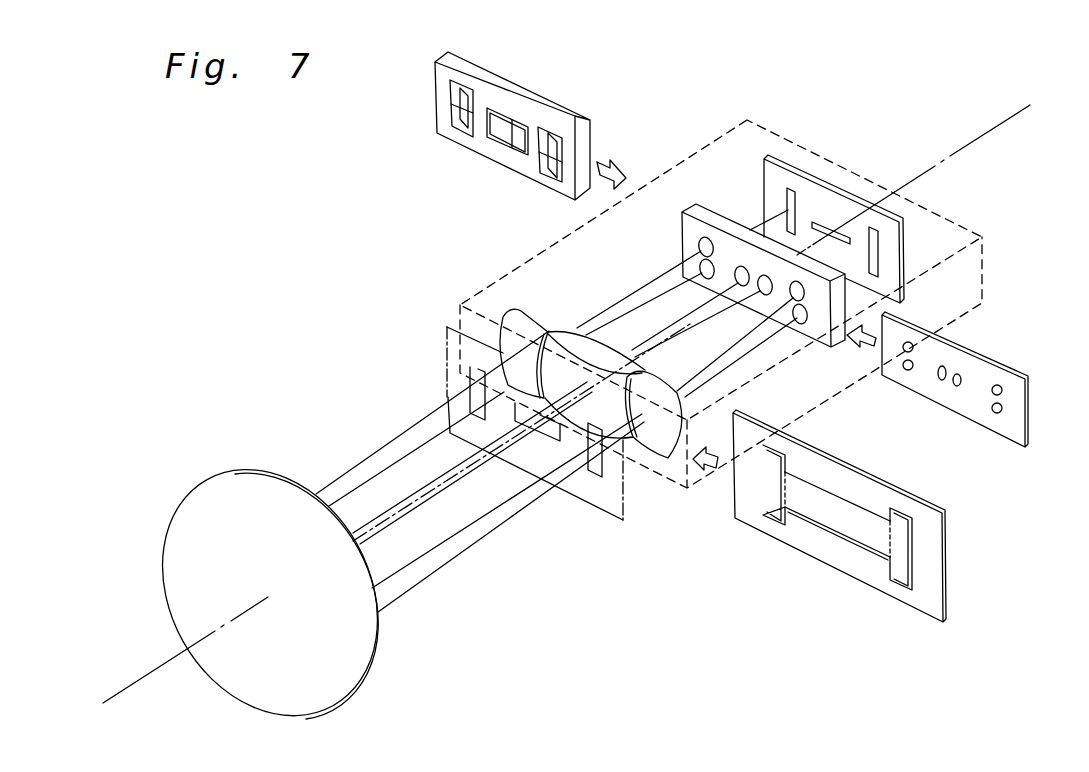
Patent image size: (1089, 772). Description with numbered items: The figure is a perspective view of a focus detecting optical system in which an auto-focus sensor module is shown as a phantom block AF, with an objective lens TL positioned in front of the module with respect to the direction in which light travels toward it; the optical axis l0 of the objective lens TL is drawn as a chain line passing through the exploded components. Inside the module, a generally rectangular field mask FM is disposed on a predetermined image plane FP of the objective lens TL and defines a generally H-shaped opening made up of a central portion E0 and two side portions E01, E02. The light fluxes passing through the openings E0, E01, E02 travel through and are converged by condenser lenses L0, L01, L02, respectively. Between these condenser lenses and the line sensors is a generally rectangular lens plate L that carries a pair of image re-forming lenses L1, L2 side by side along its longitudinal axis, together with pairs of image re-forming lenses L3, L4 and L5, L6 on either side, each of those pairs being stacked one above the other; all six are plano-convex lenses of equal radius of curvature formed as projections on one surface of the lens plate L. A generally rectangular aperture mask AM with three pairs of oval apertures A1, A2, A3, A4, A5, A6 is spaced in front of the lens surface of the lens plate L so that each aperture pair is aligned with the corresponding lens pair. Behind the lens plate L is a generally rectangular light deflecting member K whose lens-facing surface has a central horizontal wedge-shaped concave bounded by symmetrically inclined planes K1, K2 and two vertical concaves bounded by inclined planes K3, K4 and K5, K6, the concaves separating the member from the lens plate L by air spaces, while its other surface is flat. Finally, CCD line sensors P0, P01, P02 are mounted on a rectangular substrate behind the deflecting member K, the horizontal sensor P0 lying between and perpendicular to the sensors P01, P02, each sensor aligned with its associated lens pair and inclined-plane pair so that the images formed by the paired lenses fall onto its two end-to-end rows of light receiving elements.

The light deflecting member K is at (502, 126).
The inclined plane K1 is at (520, 137).
The inclined plane K2 is at (497, 131).
The inclined plane K3 is at (455, 95).
The inclined plane K4 is at (463, 118).
The inclined plane K5 is at (557, 133).
The inclined plane K6 is at (553, 167).
The AF sensor module AF is at (705, 140).
The lens plate L is at (758, 263).
The image re-forming lens L1 is at (763, 296).
The image re-forming lens L2 is at (737, 283).
The image re-forming lens L3 is at (705, 238).
The image re-forming lens L4 is at (700, 263).
The image re-forming lens L5 is at (804, 324).
The image re-forming lens L6 is at (798, 301).
The condenser lens L0 is at (610, 343).
The condenser lens L01 is at (533, 317).
The condenser lens L02 is at (663, 372).
The CCD line sensor P0 is at (882, 198).
The CCD line sensor P01 is at (786, 187).
The CCD line sensor P02 is at (878, 257).
The optical axis l0 is at (575, 391).
The image plane FP is at (447, 327).
The objective lens TL is at (203, 478).
The aperture mask AM is at (977, 399).
The oval aperture A1 is at (962, 380).
The oval aperture A2 is at (942, 380).
The oval aperture A3 is at (913, 347).
The oval aperture A4 is at (908, 371).
The oval aperture A5 is at (1002, 390).
The oval aperture A6 is at (1002, 409).
The field mask FM is at (838, 531).
The opening E0 is at (832, 534).
The opening E01 is at (772, 520).
The opening E02 is at (900, 584).